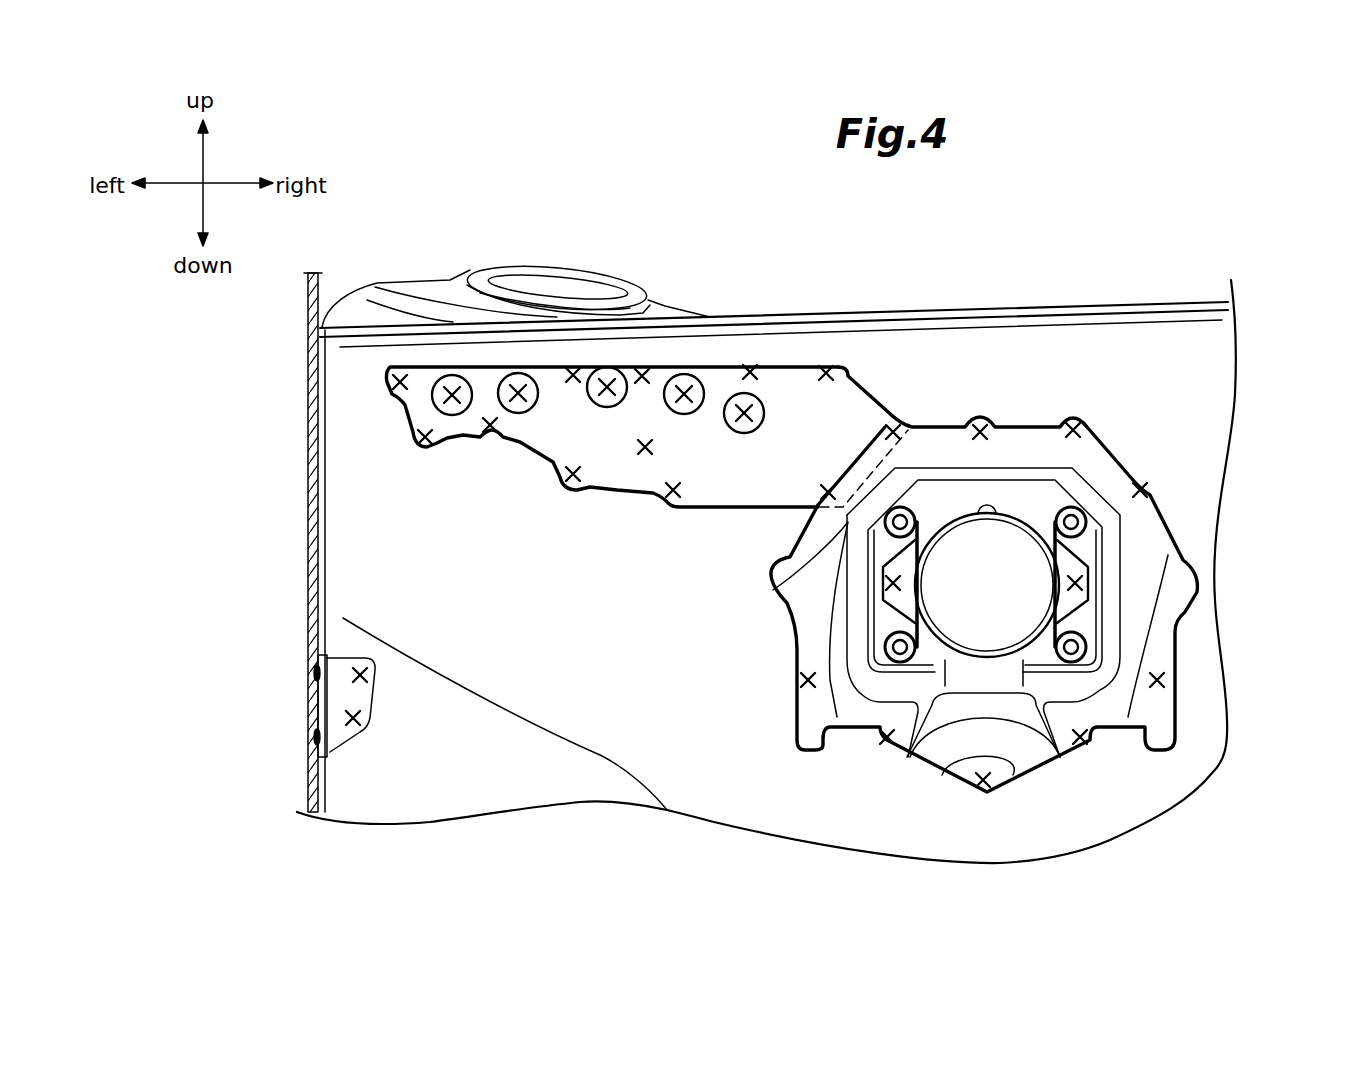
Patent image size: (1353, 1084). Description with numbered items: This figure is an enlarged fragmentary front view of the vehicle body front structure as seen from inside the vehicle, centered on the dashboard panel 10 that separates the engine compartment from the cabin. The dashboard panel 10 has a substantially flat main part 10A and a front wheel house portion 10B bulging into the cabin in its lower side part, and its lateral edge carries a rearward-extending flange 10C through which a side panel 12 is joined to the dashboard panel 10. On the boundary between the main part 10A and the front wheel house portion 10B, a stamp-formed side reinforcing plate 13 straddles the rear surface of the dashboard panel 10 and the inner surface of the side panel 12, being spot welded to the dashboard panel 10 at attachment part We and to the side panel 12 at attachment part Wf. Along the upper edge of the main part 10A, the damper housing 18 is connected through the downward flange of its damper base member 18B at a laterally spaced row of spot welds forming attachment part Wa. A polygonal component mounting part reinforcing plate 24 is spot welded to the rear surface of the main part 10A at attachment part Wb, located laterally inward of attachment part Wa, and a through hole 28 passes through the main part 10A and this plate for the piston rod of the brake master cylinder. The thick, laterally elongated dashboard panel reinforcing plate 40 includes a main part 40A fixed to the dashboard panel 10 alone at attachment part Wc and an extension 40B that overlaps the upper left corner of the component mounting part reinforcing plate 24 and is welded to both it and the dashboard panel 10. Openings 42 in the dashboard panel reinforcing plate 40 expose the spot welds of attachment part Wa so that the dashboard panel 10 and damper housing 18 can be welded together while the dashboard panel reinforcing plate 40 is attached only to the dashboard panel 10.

The dashboard panel 10 is at (1185, 711).
The main part 10A is at (1220, 398).
The front wheel house portion 10B is at (480, 797).
The flange 10C is at (322, 790).
The side panel 12 is at (310, 620).
The side reinforcing plate 13 is at (343, 741).
The damper housing 18 is at (486, 307).
The damper base member 18B is at (665, 306).
The component mounting part reinforcing plate 24 is at (1150, 542).
The through hole 28 is at (987, 581).
The dashboard panel reinforcing plate 40 is at (725, 471).
The main part 40A is at (570, 440).
The extension 40B is at (770, 598).
The openings 42 is at (437, 397).
The attachment part Wa is at (518, 390).
The attachment part Wb is at (908, 428).
The attachment part Wc is at (490, 437).
The attachment part We is at (317, 735).
The attachment part Wf is at (372, 710).